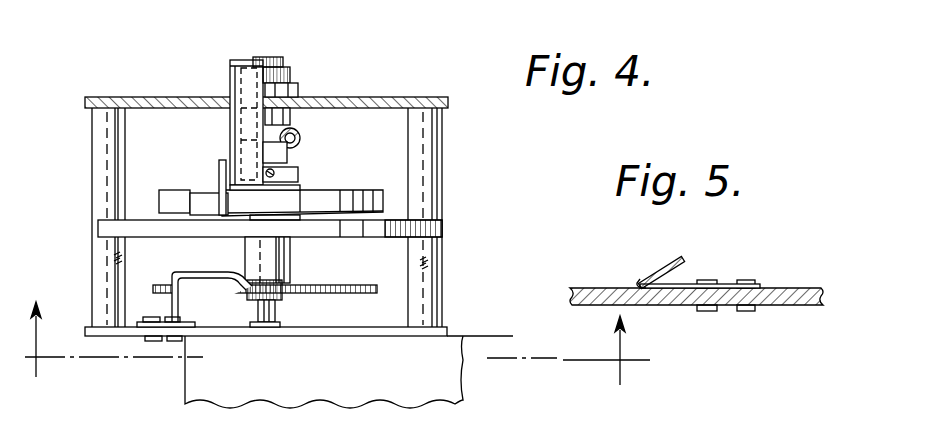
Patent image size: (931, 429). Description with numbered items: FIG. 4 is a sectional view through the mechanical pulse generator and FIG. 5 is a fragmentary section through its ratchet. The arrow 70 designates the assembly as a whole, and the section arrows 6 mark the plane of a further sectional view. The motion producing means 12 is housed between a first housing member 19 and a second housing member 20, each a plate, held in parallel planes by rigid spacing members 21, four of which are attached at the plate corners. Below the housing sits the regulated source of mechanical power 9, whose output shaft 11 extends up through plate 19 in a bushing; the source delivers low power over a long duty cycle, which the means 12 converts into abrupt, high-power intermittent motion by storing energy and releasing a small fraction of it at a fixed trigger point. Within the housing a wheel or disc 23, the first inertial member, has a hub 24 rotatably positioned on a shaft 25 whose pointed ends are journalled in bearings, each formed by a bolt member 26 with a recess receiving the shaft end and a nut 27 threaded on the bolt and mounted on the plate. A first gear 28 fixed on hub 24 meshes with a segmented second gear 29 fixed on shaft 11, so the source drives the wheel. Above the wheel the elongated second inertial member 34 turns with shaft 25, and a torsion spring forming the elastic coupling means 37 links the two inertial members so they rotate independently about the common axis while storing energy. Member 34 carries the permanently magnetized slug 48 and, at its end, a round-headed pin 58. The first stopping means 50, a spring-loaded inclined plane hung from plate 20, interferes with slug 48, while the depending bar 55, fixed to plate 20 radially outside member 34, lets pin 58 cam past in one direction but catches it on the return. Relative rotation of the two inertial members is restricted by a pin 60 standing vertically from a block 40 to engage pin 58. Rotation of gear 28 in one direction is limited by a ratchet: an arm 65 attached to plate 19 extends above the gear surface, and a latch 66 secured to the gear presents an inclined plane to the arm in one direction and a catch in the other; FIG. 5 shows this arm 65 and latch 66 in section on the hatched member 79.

In FIG. 4, the source of mechanical power 9 is at (195, 383).
In FIG. 4, the section line 6- 6 is at (281, 344).
In FIG. 5, the section line 6- 6 is at (606, 352).
In FIG. 4, the output shaft 11 is at (258, 307).
In FIG. 4, the motion producing means 12 is at (370, 167).
In FIG. 4, the first housing member 19 is at (393, 327).
In FIG. 4, the second housing member 20 is at (398, 74).
In FIG. 4, the rigid spacing members 21 is at (98, 130).
In FIG. 4, the wheel or disc 23 is at (442, 228).
In FIG. 4, the hub 24 is at (270, 255).
In FIG. 4, the shaft 25 is at (287, 120).
In FIG. 4, the bolt member 26 is at (273, 57).
In FIG. 4, the nut 27 is at (286, 74).
In FIG. 4, the first gear 28 is at (355, 293).
In FIG. 4, the second gear 29 is at (283, 298).
In FIG. 4, the second inertial member 34 is at (292, 164).
In FIG. 4, the elastic coupling means 37 is at (158, 200).
In FIG. 4, the block 40 is at (203, 202).
In FIG. 4, the permanently magnetized slug member 48 is at (253, 157).
In FIG. 4, the first stopping means 50 is at (305, 134).
In FIG. 4, the stop member 55 is at (240, 121).
In FIG. 4, the pin member 58 is at (298, 174).
In FIG. 4, the pin member 60 is at (217, 163).
In FIG. 4, the arm member 65 is at (186, 272).
In FIG. 5, the arm member 65 is at (676, 261).
In FIG. 4, the latch member 66 is at (240, 270).
In FIG. 5, the latch member 66 is at (639, 278).
In FIG. 4, the apparatus 70 is at (440, 59).
In FIG. 5, the support plate 79 is at (800, 293).